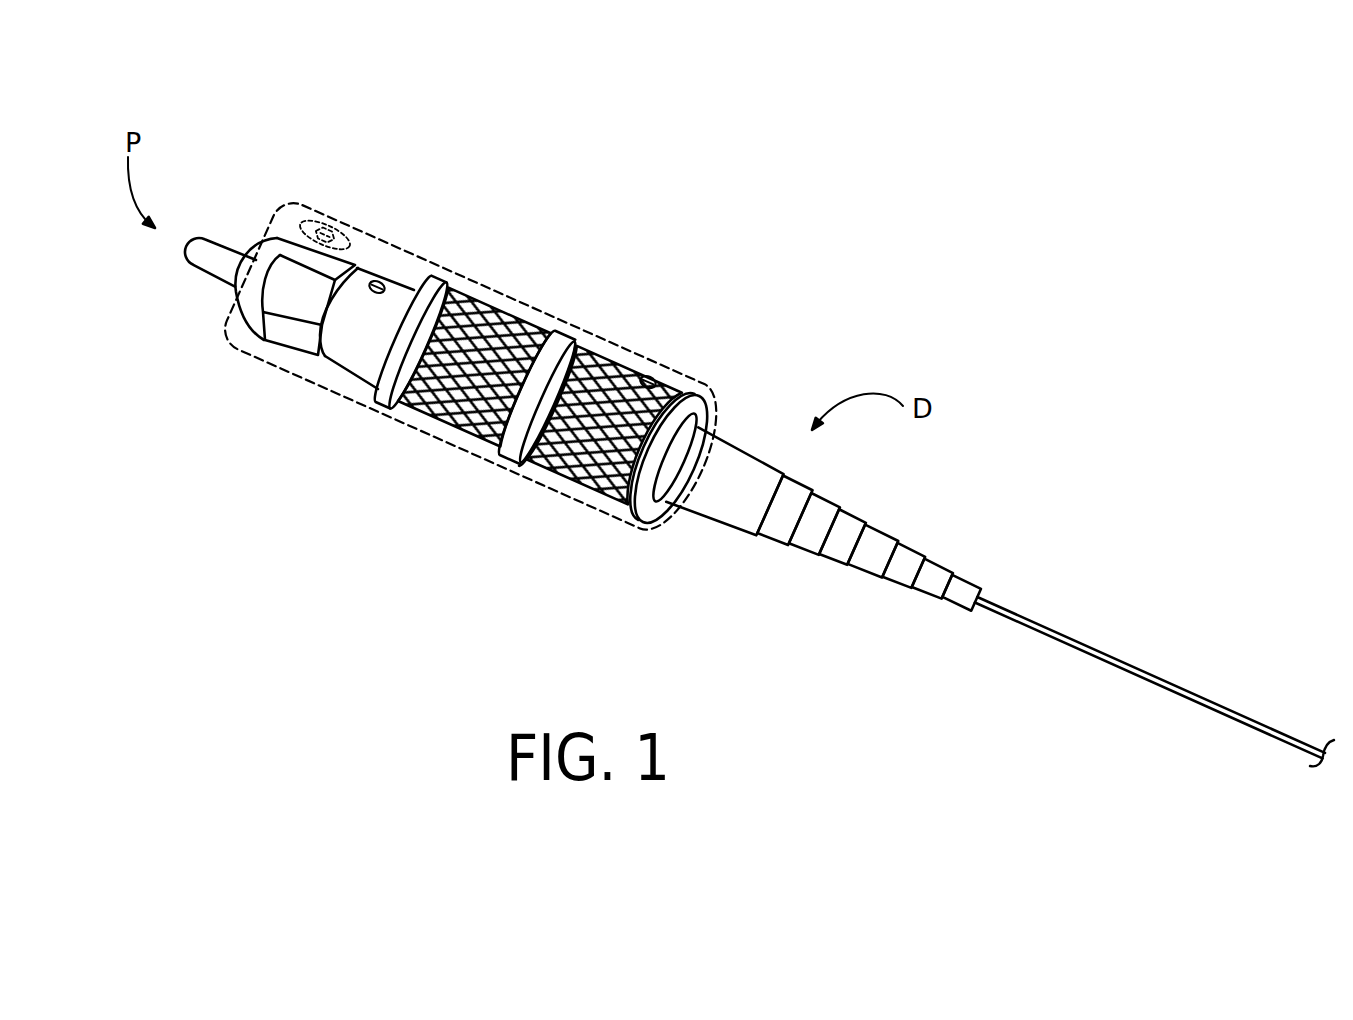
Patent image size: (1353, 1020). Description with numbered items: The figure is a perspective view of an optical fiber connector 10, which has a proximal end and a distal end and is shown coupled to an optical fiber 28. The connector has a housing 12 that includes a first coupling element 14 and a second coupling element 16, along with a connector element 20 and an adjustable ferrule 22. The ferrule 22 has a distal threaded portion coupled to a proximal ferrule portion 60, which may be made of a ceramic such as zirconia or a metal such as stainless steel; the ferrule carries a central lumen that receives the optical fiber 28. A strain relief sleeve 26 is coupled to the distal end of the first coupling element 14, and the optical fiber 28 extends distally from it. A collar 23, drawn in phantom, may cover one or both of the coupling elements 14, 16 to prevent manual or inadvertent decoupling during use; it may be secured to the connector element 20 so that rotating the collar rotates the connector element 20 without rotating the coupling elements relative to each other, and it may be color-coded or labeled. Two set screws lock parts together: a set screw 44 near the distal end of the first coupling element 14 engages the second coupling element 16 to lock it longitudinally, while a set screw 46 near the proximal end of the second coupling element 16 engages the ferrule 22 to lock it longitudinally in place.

The optical fiber connector 10 is at (750, 296).
The housing 12 is at (450, 460).
The first coupling element 14 is at (677, 393).
The second coupling element 16 is at (497, 320).
The connector element 20 is at (285, 332).
The ferrule 22 is at (210, 250).
The collar 23 is at (538, 480).
The strain relief sleeve 26 is at (823, 497).
The optical fiber 28 is at (1125, 658).
The set screw 44 is at (652, 385).
The set screw 46 is at (380, 282).
The ferrule portion 60 is at (199, 275).